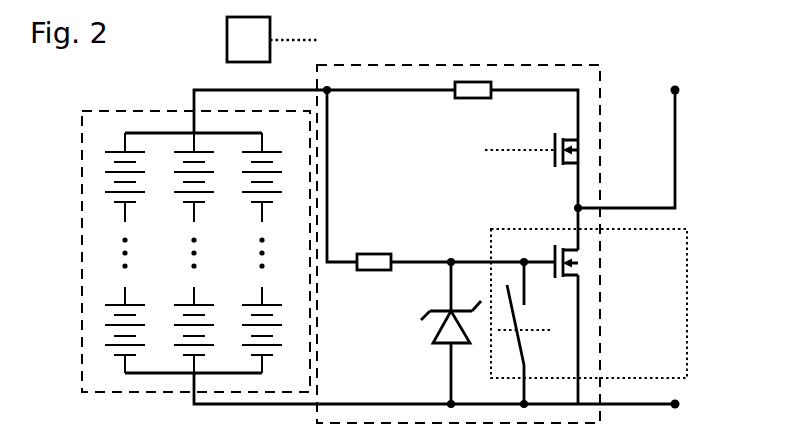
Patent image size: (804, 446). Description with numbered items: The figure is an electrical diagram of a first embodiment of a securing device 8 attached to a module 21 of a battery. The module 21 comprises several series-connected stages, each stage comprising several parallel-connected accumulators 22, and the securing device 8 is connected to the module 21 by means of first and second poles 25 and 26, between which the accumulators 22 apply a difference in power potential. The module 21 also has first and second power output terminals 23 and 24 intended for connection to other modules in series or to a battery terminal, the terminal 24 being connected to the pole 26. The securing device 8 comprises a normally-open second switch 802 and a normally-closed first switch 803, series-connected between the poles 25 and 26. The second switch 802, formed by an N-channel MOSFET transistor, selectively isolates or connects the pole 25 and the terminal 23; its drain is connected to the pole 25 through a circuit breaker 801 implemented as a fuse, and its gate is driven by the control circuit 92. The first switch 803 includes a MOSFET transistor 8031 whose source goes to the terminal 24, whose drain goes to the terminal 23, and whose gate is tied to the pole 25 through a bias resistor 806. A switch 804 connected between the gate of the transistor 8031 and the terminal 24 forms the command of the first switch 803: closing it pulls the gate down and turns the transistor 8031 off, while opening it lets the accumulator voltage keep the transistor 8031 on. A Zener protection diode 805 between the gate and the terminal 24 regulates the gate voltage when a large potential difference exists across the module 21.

The securing device 8 is at (460, 65).
The module 21 is at (82, 250).
The accumulators 22 is at (107, 152).
The first power output terminal 23 is at (680, 88).
The second power output terminal 24 is at (680, 404).
The first pole 25 is at (194, 106).
The second pole 26 is at (194, 398).
The control circuit 92 is at (227, 40).
The circuit breaker 801 is at (472, 82).
The second switch 802 is at (572, 152).
The first switch 803 is at (687, 303).
The switch 804 is at (521, 318).
The Zener protection diode 805 is at (433, 343).
The bias resistor 806 is at (374, 254).
The transistor 8031 is at (572, 264).